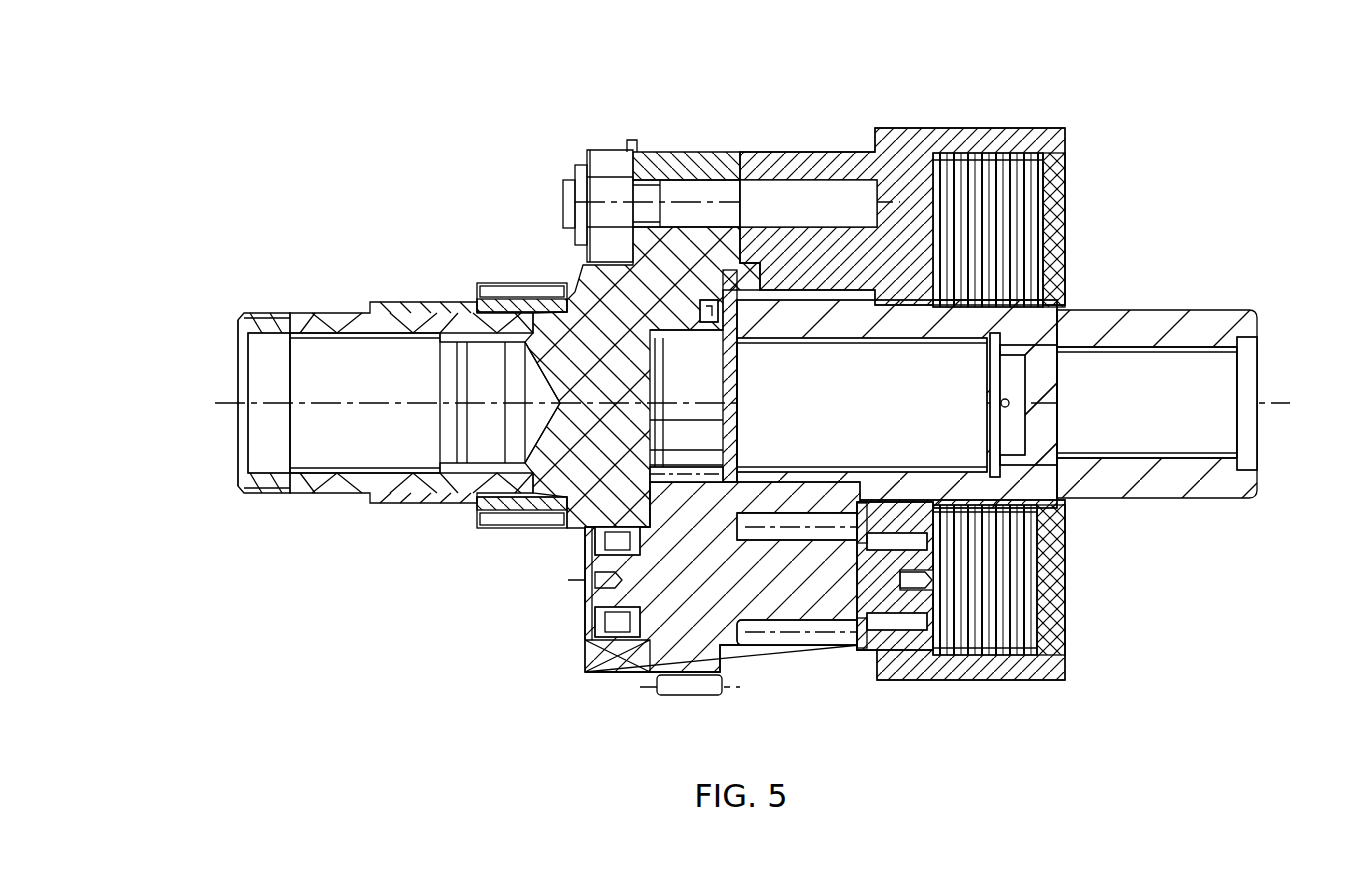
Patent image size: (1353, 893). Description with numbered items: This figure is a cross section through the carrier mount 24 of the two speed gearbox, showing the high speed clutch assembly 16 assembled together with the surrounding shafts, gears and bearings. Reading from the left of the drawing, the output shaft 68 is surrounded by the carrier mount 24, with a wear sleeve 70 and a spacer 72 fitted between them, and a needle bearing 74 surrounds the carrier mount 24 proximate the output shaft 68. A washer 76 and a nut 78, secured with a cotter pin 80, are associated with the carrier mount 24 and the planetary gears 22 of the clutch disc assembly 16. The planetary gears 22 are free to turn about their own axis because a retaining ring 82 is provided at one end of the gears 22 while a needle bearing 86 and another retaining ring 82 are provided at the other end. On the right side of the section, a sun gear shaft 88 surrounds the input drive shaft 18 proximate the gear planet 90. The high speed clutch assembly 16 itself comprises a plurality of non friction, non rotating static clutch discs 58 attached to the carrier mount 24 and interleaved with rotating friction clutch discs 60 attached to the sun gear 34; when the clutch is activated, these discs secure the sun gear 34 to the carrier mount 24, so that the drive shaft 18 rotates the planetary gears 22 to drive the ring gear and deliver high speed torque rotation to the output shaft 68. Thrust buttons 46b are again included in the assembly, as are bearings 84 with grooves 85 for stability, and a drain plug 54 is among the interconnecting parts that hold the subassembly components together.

The high speed clutch assembly 16 is at (723, 125).
The input drive shaft 18 is at (1205, 382).
The planetary gears 22 is at (667, 668).
The carrier mount 24 is at (668, 163).
The sun gear 34 is at (577, 195).
The thrust buttons 46b is at (610, 263).
The drain plug 54 is at (592, 598).
The non friction non rotating static clutch discs 58 is at (1065, 137).
The rotating friction clutch discs 60 is at (1042, 180).
The output shaft 68 is at (272, 378).
The wear sleeve 70 is at (266, 317).
The spacer 72 is at (407, 307).
The needle bearing 74 is at (480, 282).
The washer 76 is at (620, 147).
The nut 78 is at (600, 195).
The cotter pin 80 is at (567, 215).
The retaining ring 82 is at (568, 535).
The bearings 84 is at (590, 637).
The grooves 85 is at (912, 560).
The needle bearing 86 is at (893, 525).
The sun gear shaft 88 is at (1088, 325).
The gear planet 90 is at (1057, 252).